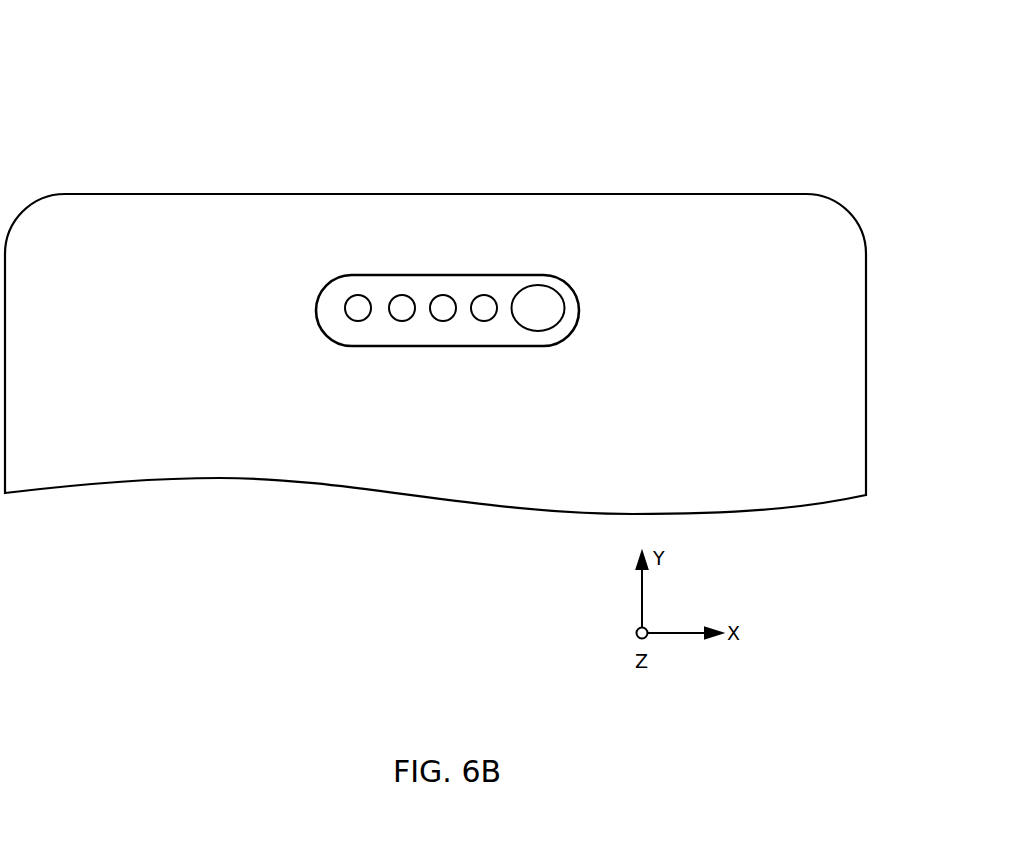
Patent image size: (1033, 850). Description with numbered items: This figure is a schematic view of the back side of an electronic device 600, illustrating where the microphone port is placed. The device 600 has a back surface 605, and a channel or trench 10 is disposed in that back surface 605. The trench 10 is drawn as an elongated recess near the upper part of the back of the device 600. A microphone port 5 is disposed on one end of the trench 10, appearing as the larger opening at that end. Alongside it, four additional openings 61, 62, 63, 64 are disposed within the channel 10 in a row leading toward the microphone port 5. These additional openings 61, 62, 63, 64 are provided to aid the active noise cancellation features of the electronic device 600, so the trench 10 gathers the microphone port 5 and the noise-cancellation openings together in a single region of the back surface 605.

The electronic device 600 is at (197, 194).
The back surface 605 is at (786, 243).
The channel or trench 10 is at (350, 278).
The additional opening 61 is at (354, 295).
The additional opening 62 is at (403, 295).
The additional opening 63 is at (447, 295).
The additional opening 64 is at (489, 295).
The microphone port 5 is at (549, 287).